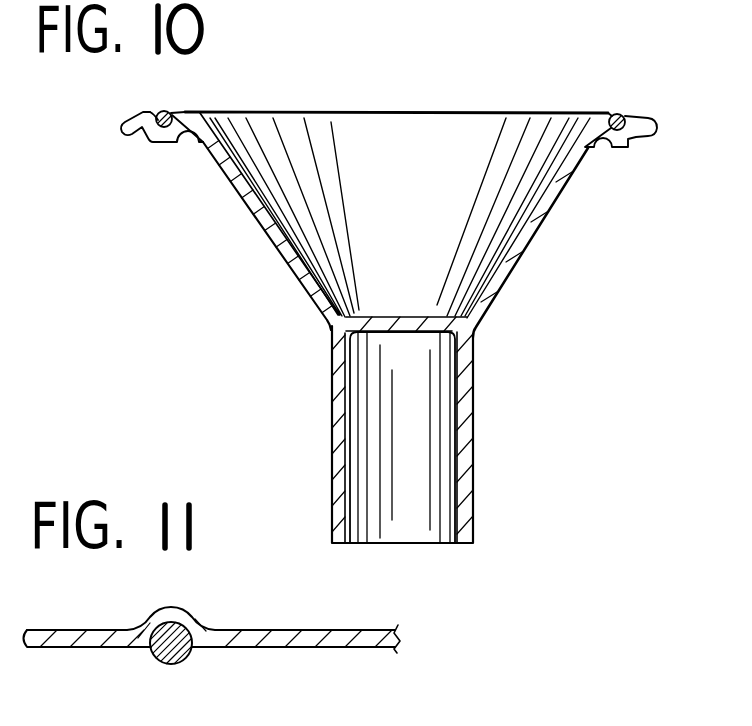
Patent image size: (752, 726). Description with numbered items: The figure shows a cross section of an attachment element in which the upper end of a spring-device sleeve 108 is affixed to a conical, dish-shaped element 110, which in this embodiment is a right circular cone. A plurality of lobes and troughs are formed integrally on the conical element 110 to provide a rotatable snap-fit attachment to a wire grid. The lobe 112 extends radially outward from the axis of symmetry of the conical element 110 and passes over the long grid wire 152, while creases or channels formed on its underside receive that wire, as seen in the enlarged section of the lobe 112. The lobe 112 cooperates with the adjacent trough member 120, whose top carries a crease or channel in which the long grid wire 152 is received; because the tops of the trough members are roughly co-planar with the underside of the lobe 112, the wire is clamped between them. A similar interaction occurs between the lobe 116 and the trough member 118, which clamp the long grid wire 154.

In FIG. 10, the spring-device sleeve 108 is at (474, 408).
In FIG. 10, the conical element 110 is at (530, 236).
In FIG. 11, the lobe 112 is at (99, 629).
In FIG. 10, the lobe 116 is at (405, 0).
In FIG. 10, the trough member 118 is at (622, 152).
In FIG. 10, the trough member 120 is at (143, 148).
In FIG. 10, the long grid wire 152 is at (170, 112).
In FIG. 11, the long grid wire 152 is at (172, 664).
In FIG. 10, the long grid wire 154 is at (618, 113).